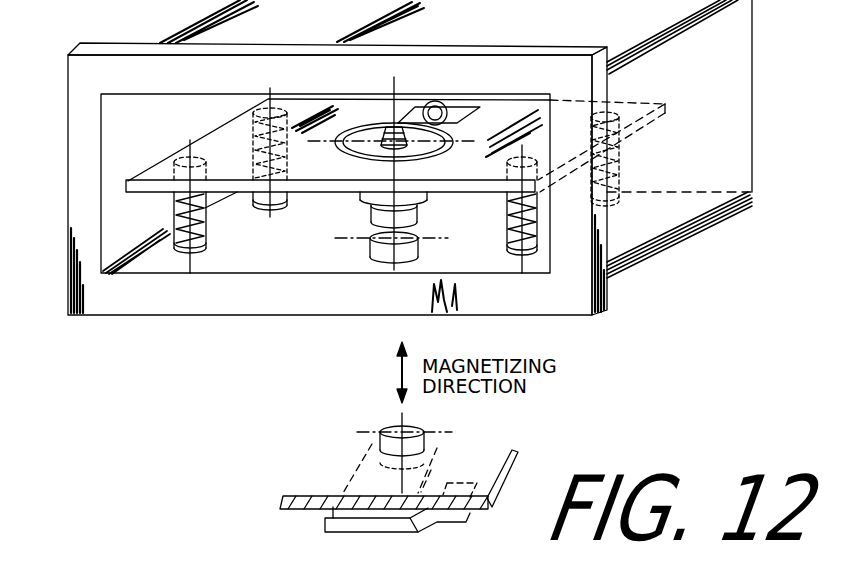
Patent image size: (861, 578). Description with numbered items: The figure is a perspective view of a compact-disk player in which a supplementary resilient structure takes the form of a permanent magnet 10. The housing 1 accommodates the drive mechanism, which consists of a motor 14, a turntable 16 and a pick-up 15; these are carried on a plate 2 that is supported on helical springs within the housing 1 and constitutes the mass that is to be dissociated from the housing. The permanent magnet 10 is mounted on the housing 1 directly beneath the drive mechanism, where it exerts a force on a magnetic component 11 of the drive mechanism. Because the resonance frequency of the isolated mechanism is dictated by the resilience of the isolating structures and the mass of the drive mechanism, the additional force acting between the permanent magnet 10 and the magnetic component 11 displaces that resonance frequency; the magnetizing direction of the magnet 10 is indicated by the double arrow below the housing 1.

The housing 1 is at (80, 190).
The base plate 2 is at (222, 140).
The permanent magnet 10 is at (382, 252).
The magnetic component 11 is at (408, 213).
The motor 14 is at (369, 199).
The pick-up 15 is at (438, 110).
The turntable 16 is at (370, 128).